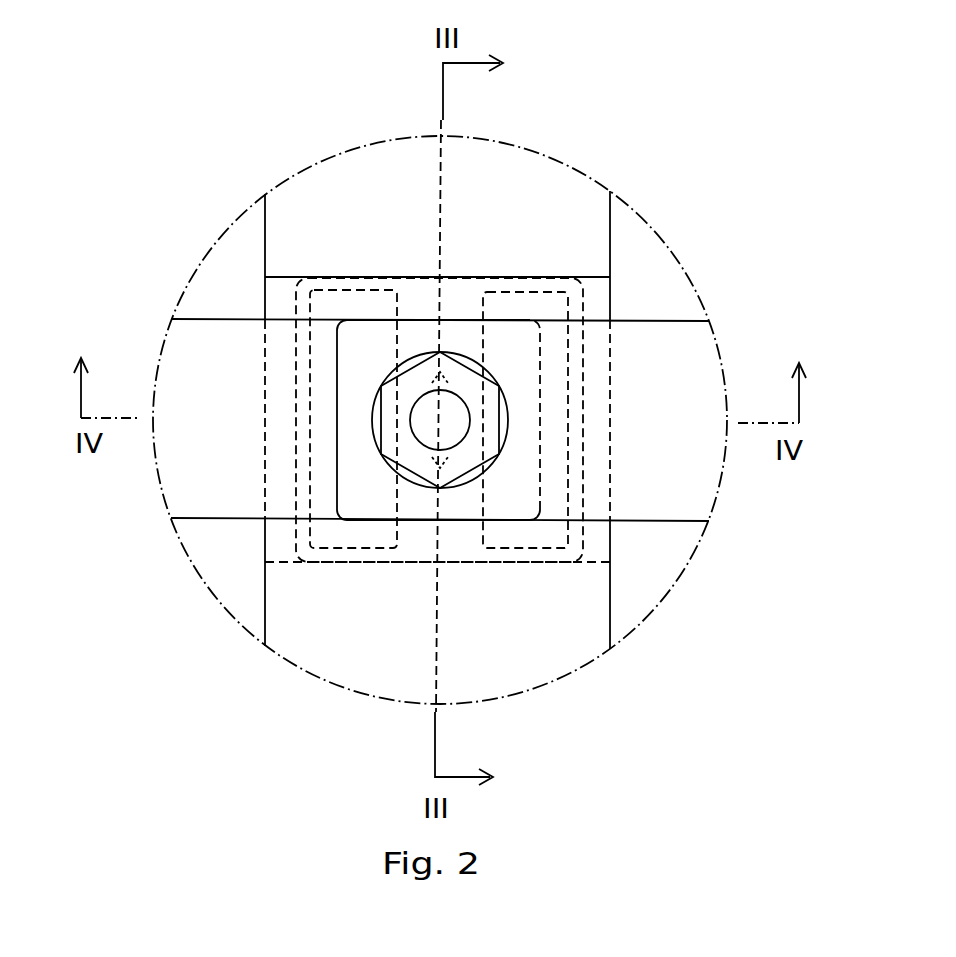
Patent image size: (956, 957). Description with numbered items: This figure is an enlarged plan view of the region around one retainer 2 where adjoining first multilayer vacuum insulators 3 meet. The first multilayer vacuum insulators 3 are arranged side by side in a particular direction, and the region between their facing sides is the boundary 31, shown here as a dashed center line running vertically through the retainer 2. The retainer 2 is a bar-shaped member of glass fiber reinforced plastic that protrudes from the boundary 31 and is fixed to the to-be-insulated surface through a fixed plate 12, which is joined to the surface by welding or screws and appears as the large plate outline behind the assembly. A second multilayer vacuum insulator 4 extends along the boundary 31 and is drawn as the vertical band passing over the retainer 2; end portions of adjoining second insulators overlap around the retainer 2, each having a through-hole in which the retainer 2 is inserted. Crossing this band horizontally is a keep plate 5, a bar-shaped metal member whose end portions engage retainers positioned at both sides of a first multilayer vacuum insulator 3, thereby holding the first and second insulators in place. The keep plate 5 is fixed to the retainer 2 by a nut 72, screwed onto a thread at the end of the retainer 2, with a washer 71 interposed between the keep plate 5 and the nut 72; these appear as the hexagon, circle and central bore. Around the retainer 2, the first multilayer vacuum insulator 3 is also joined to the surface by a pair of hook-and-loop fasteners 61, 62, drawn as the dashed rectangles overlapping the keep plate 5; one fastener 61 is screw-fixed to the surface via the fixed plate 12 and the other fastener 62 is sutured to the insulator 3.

The retainer 2 is at (479, 372).
The first multilayer vacuum insulator 3 is at (228, 555).
The boundary 31 is at (437, 633).
The second multilayer vacuum insulator 4 is at (371, 197).
The keep plate 5 is at (205, 460).
The fixed plate 12 is at (320, 282).
The hook-and-loop fastener 61 is at (455, 520).
The hook-and-loop fastener 62 is at (347, 537).
The washer 71 is at (507, 410).
The nut 72 is at (440, 412).